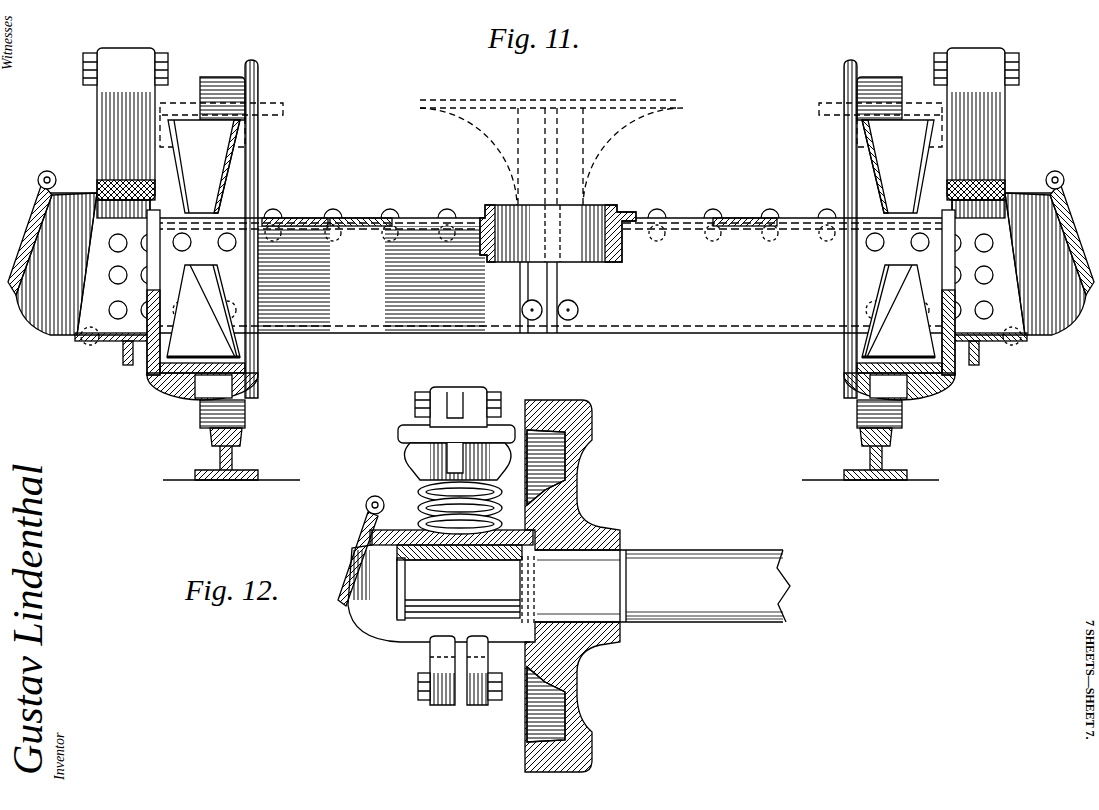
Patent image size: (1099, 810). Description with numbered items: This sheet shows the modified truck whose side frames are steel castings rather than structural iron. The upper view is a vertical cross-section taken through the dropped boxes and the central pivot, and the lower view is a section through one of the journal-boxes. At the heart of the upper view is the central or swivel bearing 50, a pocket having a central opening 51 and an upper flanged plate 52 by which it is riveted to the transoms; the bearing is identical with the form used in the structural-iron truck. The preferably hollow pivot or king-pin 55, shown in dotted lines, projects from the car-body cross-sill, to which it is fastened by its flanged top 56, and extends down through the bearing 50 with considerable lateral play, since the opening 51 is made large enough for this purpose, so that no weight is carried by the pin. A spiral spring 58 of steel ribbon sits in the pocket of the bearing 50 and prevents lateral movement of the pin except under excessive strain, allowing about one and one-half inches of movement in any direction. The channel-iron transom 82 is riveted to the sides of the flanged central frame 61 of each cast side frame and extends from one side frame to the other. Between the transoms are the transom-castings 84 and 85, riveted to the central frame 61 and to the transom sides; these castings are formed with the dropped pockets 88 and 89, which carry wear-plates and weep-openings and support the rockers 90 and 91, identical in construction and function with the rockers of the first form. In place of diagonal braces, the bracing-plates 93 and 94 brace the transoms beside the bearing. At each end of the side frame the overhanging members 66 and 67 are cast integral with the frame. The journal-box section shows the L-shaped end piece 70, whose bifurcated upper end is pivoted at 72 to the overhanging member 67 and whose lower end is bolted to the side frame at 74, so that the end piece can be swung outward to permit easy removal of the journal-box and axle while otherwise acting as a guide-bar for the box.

In FIG. 11, the central bearing 50 is at (622, 246).
In FIG. 11, the central opening 51 is at (596, 258).
In FIG. 11, the upper flanged plate 52 is at (484, 218).
In FIG. 11, the hollow pivot or king-pin 55 is at (622, 132).
In FIG. 11, the flanged top 56 is at (676, 108).
In FIG. 11, the spiral spring 58 is at (602, 212).
In FIG. 11, the flanged central frame 61 is at (105, 176).
In FIG. 11, the overhanging member 66 is at (127, 58).
In FIG. 11, the overhanging member 67 is at (968, 56).
In FIG. 12, the overhanging member 67 is at (468, 395).
In FIG. 12, the L-shaped end piece 70 is at (420, 456).
In FIG. 11, the pivot 72 is at (170, 62).
In FIG. 12, the pivot 72 is at (498, 402).
In FIG. 12, the bolt connection 74 is at (420, 702).
In FIG. 11, the transom 82 is at (382, 322).
In FIG. 11, the transom-casting 84 is at (296, 218).
In FIG. 11, the transom-casting 85 is at (850, 246).
In FIG. 11, the dropped pocket 88 is at (258, 348).
In FIG. 11, the dropped pocket 89 is at (848, 352).
In FIG. 11, the rocker 90 is at (168, 355).
In FIG. 11, the rocker 91 is at (882, 178).
In FIG. 11, the bracing-plate 93 is at (362, 220).
In FIG. 11, the bracing-plate 94 is at (748, 222).